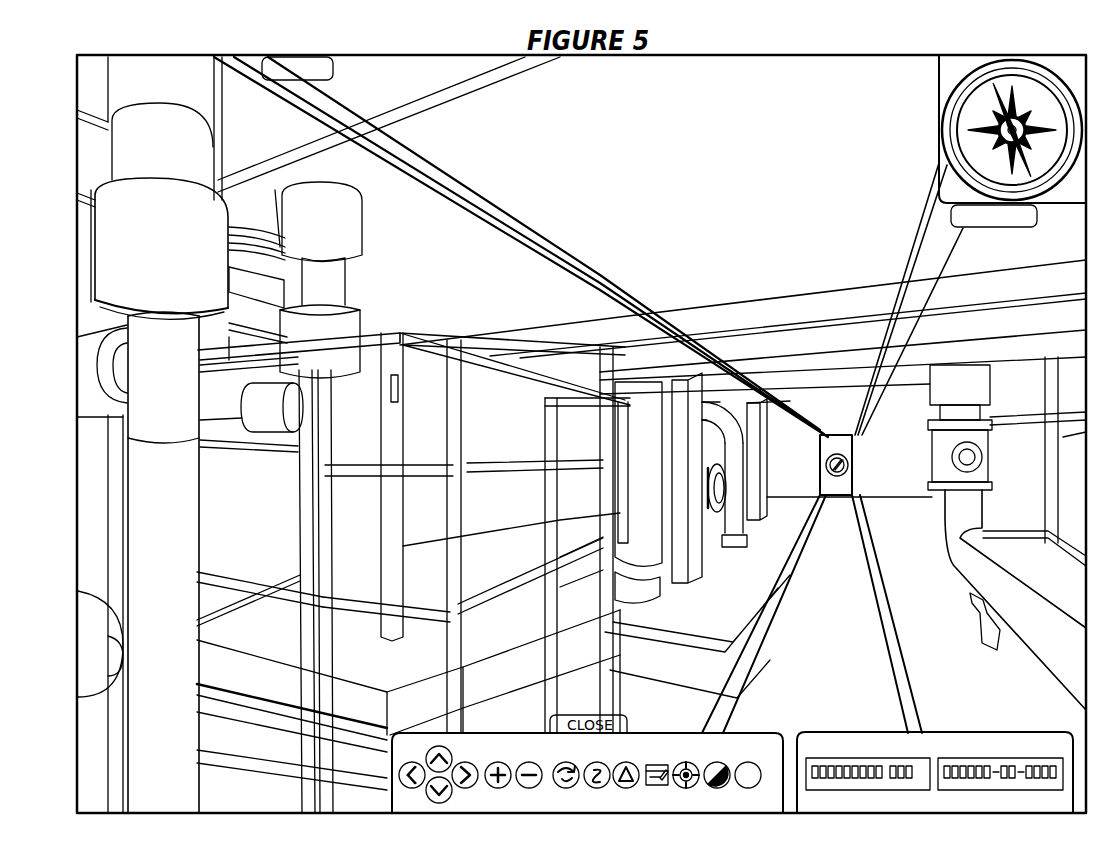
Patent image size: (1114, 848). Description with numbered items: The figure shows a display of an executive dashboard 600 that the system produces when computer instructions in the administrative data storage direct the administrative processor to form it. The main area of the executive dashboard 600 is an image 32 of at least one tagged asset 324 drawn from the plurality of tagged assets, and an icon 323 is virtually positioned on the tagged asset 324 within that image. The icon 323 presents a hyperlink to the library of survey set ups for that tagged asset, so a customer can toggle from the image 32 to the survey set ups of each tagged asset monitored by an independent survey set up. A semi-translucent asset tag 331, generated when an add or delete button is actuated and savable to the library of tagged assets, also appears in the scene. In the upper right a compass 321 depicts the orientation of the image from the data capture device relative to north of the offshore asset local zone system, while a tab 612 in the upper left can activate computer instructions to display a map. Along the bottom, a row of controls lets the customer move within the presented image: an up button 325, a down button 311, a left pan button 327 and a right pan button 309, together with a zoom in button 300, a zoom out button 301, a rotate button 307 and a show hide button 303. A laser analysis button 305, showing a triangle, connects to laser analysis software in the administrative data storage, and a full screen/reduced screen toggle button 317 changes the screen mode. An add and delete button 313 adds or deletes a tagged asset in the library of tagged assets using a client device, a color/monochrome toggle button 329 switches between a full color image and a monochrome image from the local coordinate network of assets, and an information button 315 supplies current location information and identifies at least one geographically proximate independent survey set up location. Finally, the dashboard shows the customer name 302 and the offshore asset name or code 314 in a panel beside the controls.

The executive dashboard 600 is at (42, 66).
The image 32 is at (824, 76).
The tab 612 is at (333, 70).
The compass 321 is at (1037, 217).
The icon 323 is at (846, 472).
The tagged asset 324 is at (858, 448).
The semi-translucent asset tag 331 is at (390, 390).
The up button 325 is at (426, 752).
The left pan button 327 is at (410, 790).
The right pan button 309 is at (450, 758).
The down button 311 is at (450, 795).
The zoom in button 300 is at (505, 762).
The zoom out button 301 is at (525, 795).
The rotate button 307 is at (572, 762).
The show hide button 303 is at (593, 795).
The laser analysis button 305 is at (637, 762).
The full screen/reduced screen toggle button 317 is at (657, 786).
The add and delete button 313 is at (694, 762).
The color/monochrome toggle button 329 is at (710, 788).
The information button 315 is at (756, 762).
The customer name 302 is at (870, 790).
The offshore asset name or code 314 is at (1005, 790).